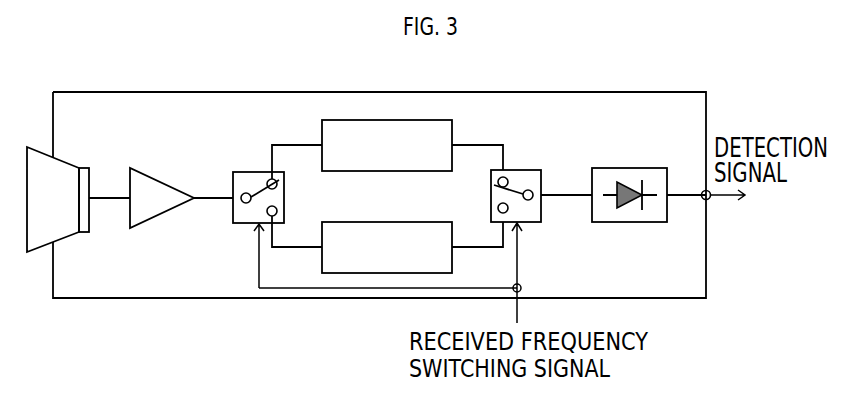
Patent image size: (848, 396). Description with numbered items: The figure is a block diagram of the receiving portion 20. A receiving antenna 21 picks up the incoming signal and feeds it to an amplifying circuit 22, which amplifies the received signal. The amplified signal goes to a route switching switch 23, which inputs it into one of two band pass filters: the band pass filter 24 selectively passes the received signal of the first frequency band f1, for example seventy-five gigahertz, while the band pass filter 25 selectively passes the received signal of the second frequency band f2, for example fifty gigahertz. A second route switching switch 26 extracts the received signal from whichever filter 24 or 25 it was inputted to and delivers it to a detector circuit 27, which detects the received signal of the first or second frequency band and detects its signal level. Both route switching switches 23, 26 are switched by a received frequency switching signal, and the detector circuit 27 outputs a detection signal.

The receiving portion 20 is at (497, 92).
The receiving antenna 21 is at (57, 160).
The amplifying circuit 22 is at (143, 168).
The route switching switch 23 is at (258, 172).
The band pass filter 24 is at (412, 120).
The band pass filter 25 is at (412, 222).
The route switching switch 26 is at (527, 170).
The detector circuit 27 is at (645, 168).